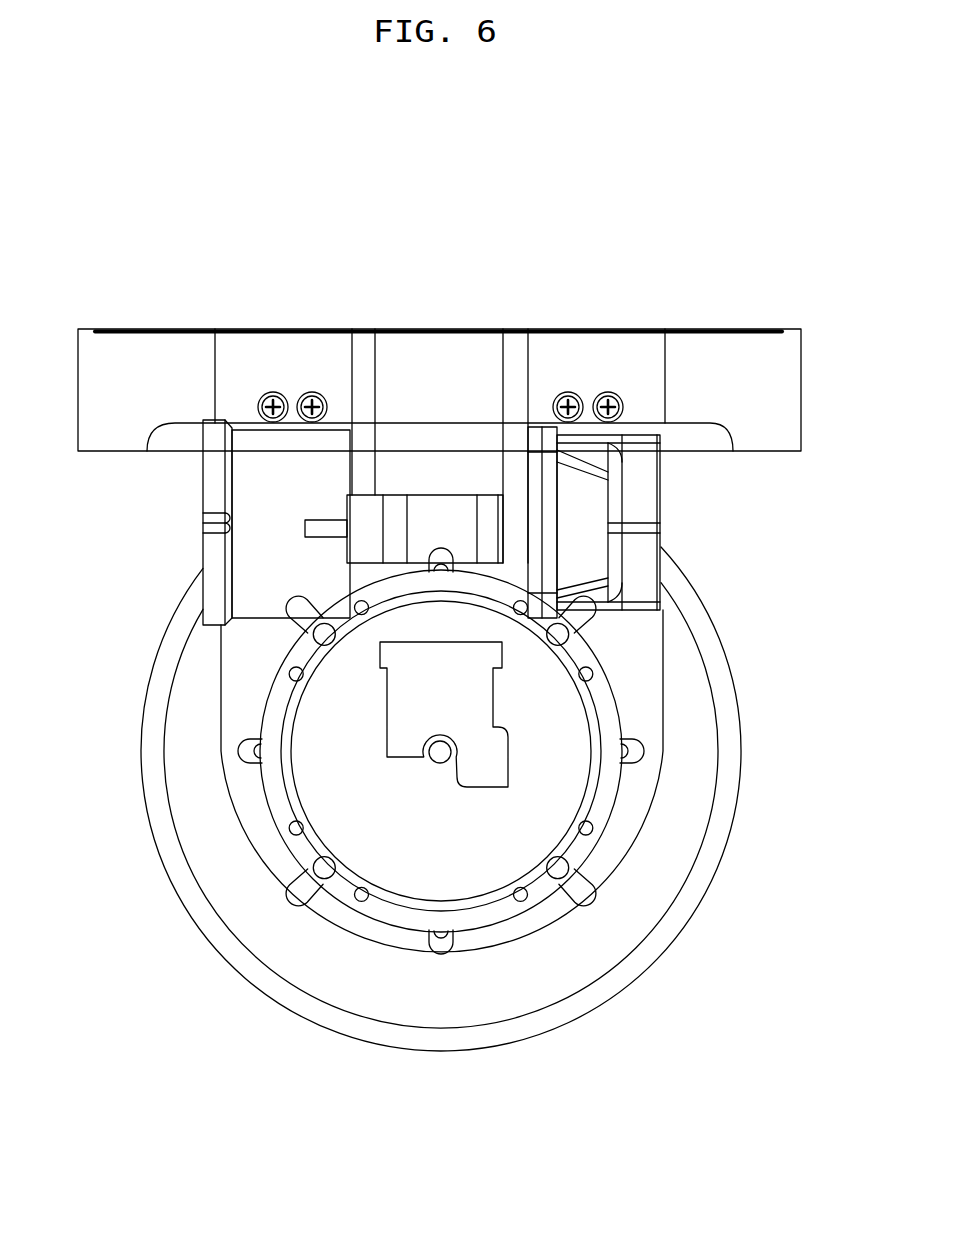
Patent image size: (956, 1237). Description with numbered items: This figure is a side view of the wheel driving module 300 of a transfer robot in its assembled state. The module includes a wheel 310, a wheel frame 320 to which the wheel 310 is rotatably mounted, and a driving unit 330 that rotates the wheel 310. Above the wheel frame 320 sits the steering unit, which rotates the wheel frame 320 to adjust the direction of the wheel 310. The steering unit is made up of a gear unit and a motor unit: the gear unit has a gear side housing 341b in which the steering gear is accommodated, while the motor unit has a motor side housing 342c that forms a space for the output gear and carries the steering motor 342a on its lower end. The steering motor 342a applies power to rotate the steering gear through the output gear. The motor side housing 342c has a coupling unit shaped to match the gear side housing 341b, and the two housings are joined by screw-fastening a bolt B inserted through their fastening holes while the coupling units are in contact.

The wheel driving module 300 is at (459, 189).
The gear side housing 341b is at (150, 350).
The motor side housing 342c is at (440, 350).
The steering motor 342a is at (258, 484).
The bolt B is at (312, 393).
The wheel frame 320 is at (647, 687).
The wheel 310 is at (695, 778).
The driving unit 330 is at (598, 807).